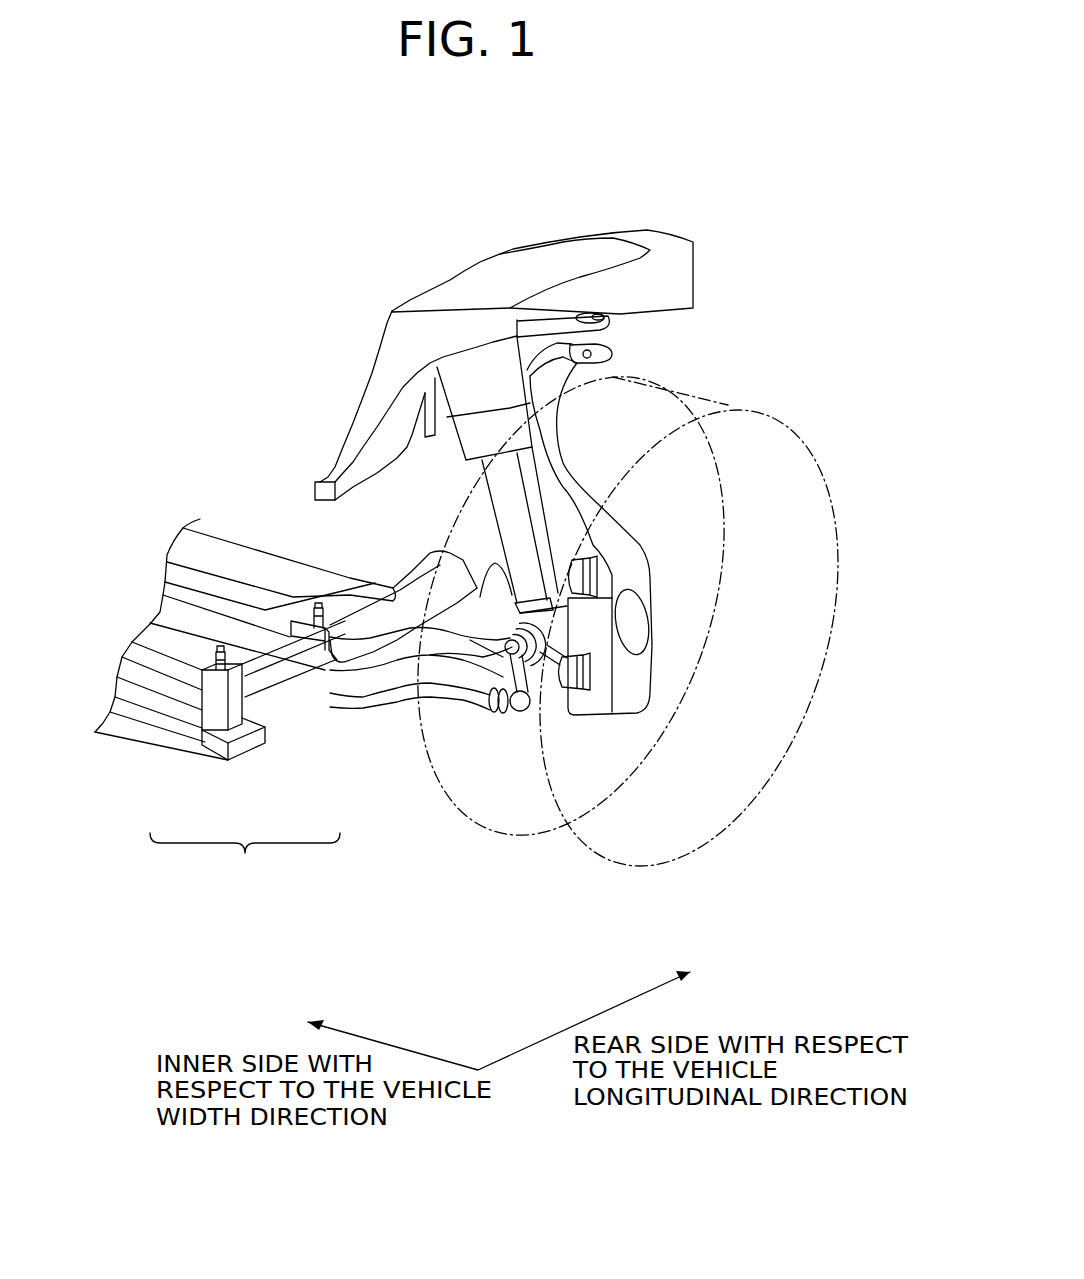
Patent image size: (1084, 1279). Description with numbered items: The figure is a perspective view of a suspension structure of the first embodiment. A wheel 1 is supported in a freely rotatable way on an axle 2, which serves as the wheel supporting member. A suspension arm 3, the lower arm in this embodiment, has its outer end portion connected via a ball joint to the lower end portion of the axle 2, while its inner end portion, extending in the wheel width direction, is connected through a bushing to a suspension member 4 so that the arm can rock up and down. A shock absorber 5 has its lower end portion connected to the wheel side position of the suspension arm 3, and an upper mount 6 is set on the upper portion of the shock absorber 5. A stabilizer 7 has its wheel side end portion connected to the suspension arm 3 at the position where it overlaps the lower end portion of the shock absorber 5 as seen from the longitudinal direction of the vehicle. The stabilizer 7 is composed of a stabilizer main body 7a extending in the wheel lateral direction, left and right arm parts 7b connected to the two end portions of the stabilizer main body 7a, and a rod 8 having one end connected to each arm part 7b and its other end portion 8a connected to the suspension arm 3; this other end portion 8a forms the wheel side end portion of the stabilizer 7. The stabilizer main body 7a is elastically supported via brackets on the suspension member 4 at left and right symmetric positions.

The wheel 1 is at (785, 420).
The axle 2 is at (623, 525).
The suspension arm 3 is at (447, 683).
The suspension member 4 is at (415, 578).
The shock absorber 5 is at (478, 499).
The upper mount 6 is at (503, 270).
The stabilizer 7 is at (247, 757).
The stabilizer main body 7a is at (153, 660).
The arm part 7b is at (402, 675).
The rod 8 is at (528, 700).
The other end portion of the rod 8a is at (506, 651).